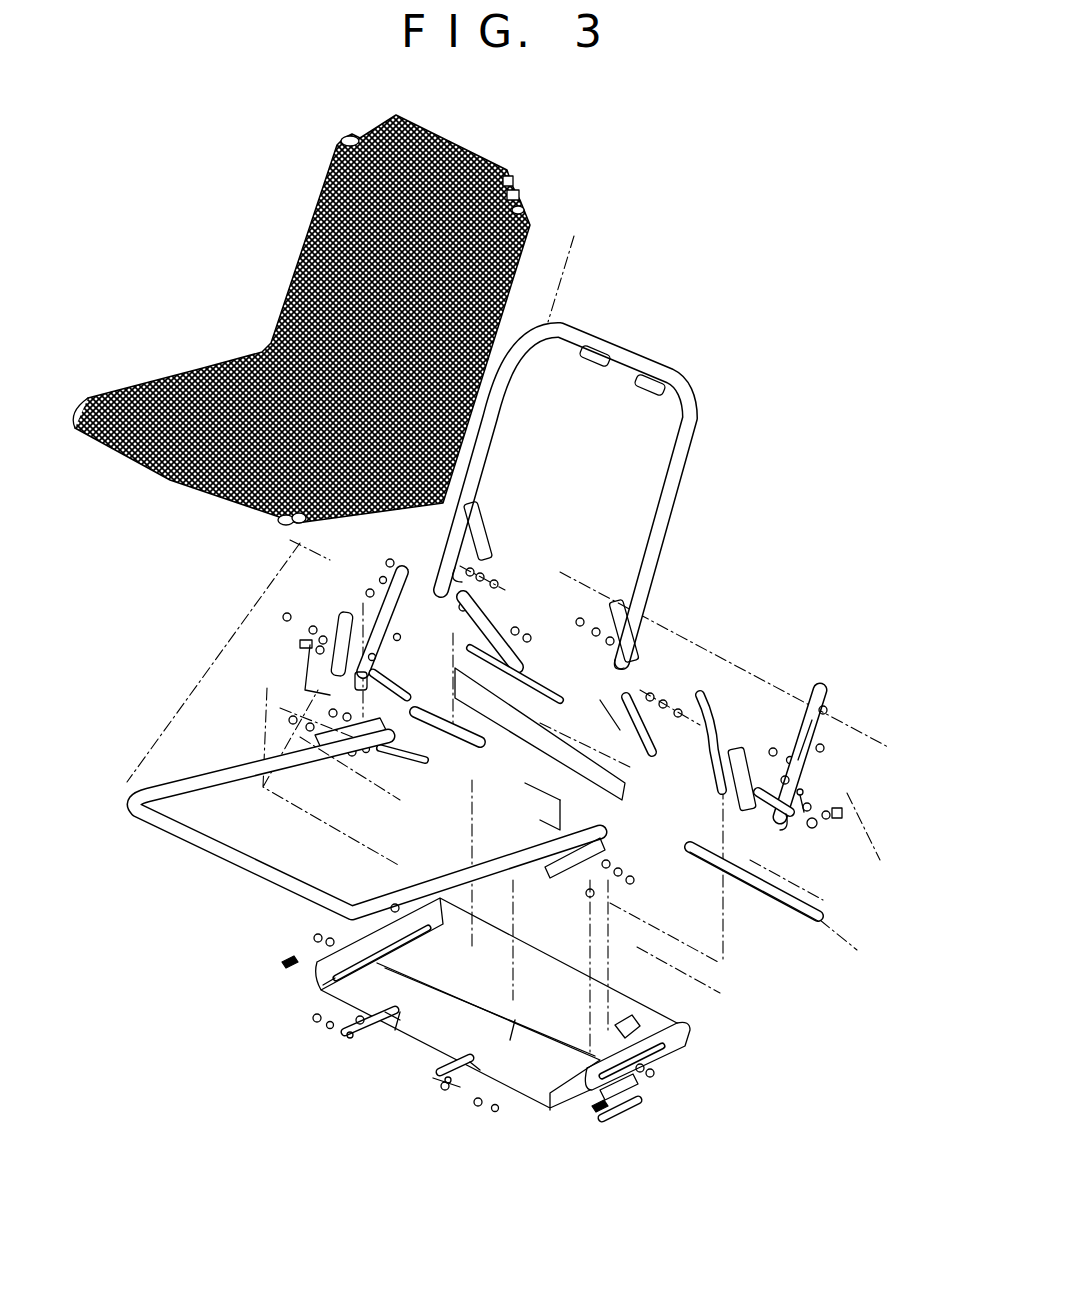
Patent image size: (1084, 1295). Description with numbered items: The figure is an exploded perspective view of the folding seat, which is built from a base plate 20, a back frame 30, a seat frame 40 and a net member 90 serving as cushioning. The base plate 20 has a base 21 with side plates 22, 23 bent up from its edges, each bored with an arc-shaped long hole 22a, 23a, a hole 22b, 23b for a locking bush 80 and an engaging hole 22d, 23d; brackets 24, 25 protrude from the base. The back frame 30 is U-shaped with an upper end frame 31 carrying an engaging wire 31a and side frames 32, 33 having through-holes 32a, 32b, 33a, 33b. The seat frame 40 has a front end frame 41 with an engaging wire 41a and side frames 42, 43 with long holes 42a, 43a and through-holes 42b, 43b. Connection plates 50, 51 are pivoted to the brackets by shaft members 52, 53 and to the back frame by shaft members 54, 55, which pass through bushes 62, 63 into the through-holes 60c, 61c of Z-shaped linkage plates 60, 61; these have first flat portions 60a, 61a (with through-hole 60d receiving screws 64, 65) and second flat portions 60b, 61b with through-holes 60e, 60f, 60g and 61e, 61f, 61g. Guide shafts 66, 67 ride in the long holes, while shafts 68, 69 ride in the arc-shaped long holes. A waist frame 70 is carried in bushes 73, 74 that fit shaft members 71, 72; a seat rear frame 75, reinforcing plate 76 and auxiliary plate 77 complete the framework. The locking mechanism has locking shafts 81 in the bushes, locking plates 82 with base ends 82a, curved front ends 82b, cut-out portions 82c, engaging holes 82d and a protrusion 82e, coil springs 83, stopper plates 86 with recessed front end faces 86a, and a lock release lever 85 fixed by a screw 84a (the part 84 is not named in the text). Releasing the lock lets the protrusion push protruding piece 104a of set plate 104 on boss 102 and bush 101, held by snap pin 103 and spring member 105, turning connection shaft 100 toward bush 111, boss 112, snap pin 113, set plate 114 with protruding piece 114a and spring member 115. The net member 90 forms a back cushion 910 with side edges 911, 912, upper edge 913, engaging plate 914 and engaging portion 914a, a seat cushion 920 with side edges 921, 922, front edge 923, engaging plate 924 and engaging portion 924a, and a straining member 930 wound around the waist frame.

The base plate 20 is at (400, 1050).
The base 21 is at (392, 1052).
The side plate 22 is at (670, 1025).
The arc-shaped long hole 22a is at (690, 1040).
The hole 22b is at (585, 1072).
The engaging hole 22d is at (600, 1030).
The side plate 23 is at (472, 912).
The arc-shaped long hole 23a is at (345, 940).
The hole 23b is at (325, 955).
The engaging hole 23d is at (388, 911).
The bracket 24 is at (625, 1015).
The bracket 25 is at (490, 1006).
The back frame 30 is at (700, 470).
The upper end frame 31 is at (610, 352).
The engaging wire 31a is at (648, 394).
The side frame 32 is at (675, 530).
The through-hole 32a is at (645, 618).
The through-hole 32b is at (640, 652).
The side frame 33 is at (512, 403).
The through-hole 33a is at (482, 512).
The through-hole 33b is at (470, 565).
The seat frame 40 is at (130, 810).
The front end frame 41 is at (210, 845).
The engaging wire 41a is at (310, 885).
The side frame 42 is at (445, 872).
The long hole 42a is at (550, 876).
The through-hole 42b is at (624, 882).
The side frame 43 is at (240, 765).
The long hole 43a is at (358, 758).
The through-hole 43b is at (400, 731).
The connection plate 50 is at (708, 705).
The connection plate 51 is at (498, 612).
The shaft member 52 is at (640, 785).
The shaft member 53 is at (540, 685).
The shaft member 54 is at (672, 702).
The shaft member 55 is at (535, 635).
The linkage plate 60 is at (814, 680).
The first flat portion 60a is at (800, 712).
The second flat portion 60b is at (772, 782).
The through-hole 60c is at (825, 690).
The through-hole 60d is at (459, 607).
The through-hole 60e is at (767, 760).
The through-hole 60f is at (778, 814).
The through-hole 60g is at (825, 748).
The linkage plate 61 is at (403, 566).
The first flat portion 61a is at (370, 591).
The second flat portion 61b is at (378, 656).
The through-hole 61c is at (385, 563).
The through-hole 61e is at (402, 637).
The through-hole 61f is at (338, 708).
The through-hole 61g is at (390, 680).
The bush 62 is at (828, 708).
The bush 63 is at (384, 575).
The screw 64 is at (598, 628).
The screw 65 is at (500, 582).
The guide shaft 66 is at (586, 896).
The guide shaft 67 is at (288, 717).
The shaft 68 is at (742, 793).
The shaft 69 is at (361, 726).
The waist frame 70 is at (626, 697).
The shaft member 71 is at (632, 874).
The shaft member 72 is at (306, 660).
The bush 73 is at (538, 822).
The bush 74 is at (412, 765).
The seat rear frame 75 is at (522, 784).
The reinforcing plate 76 is at (344, 635).
The auxiliary plate 77 is at (600, 701).
The locking bush 80 is at (314, 938).
The locking shaft 81 is at (355, 1025).
The locking plate 82 is at (365, 1012).
The base end 82a is at (345, 1040).
The front end 82b is at (482, 1066).
The cut-out portion 82c is at (475, 1030).
The engaging hole 82d is at (437, 1085).
The protrusion 82e is at (392, 1004).
The coil spring 83 is at (280, 963).
The plate 84 is at (640, 1083).
The screw 84a is at (645, 1102).
The lock release lever 85 is at (625, 1118).
The stopper plate 86 is at (312, 1018).
The front end face 86a is at (326, 1028).
The net member 90 is at (258, 320).
The back cushion 910 is at (298, 236).
The side edge 911 is at (556, 226).
The side edge 912 is at (343, 137).
The upper edge 913 is at (516, 178).
The engaging plate 914 is at (522, 194).
The engaging portion 914a is at (526, 208).
The seat cushion 920 is at (185, 371).
The side edge 921 is at (288, 524).
The side edge 922 is at (88, 400).
The front edge 923 is at (276, 524).
The engaging plate 924 is at (272, 530).
The engaging portion 924a is at (290, 560).
The straining member 930 is at (465, 438).
The connection shaft 100 is at (760, 895).
The bush 101 is at (812, 805).
The boss 102 is at (824, 839).
The snap pin 103 is at (812, 803).
The set plate 104 is at (845, 825).
The protruding piece 104a is at (835, 812).
The spring member 105 is at (785, 840).
The bush 111 is at (352, 682).
The boss 112 is at (323, 635).
The snap pin 113 is at (314, 625).
The set plate 114 is at (315, 650).
The protruding piece 114a is at (299, 604).
The spring member 115 is at (300, 646).